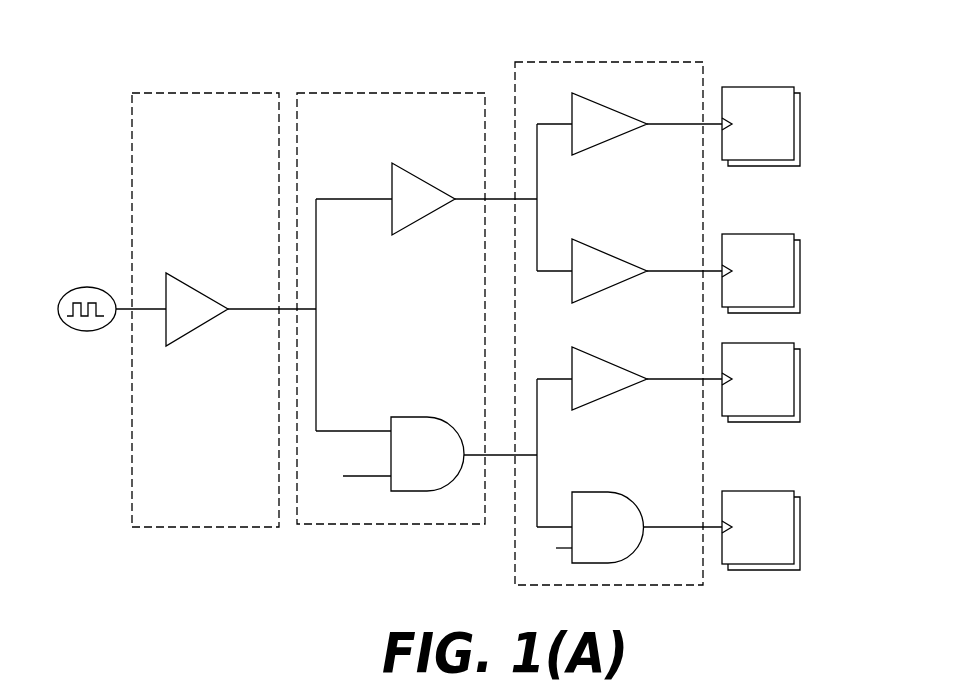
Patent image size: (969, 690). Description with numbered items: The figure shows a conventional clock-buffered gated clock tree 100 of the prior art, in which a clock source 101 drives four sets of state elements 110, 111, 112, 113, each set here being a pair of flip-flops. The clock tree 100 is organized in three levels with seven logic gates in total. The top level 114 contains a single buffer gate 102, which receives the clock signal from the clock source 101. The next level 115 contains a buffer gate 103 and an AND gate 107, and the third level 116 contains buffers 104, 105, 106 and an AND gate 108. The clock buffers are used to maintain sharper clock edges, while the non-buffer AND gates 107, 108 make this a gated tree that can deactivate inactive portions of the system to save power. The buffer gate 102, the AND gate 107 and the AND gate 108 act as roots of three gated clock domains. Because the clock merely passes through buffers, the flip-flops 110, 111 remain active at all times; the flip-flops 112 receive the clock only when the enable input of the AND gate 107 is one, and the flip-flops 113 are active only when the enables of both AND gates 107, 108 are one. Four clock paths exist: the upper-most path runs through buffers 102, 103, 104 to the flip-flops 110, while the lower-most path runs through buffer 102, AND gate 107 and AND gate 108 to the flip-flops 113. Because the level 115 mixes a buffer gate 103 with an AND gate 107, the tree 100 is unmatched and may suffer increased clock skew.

The conventional clock tree 100 is at (300, 77).
The clock source 101 is at (88, 287).
The buffer gate 102 is at (200, 293).
The buffer gate 103 is at (410, 173).
The buffer 104 is at (625, 134).
The buffer 105 is at (605, 253).
The buffer 106 is at (605, 361).
The AND gate 107 is at (410, 417).
The AND gate 108 is at (625, 496).
The flip-flops 110 is at (752, 87).
The flip-flops 111 is at (768, 234).
The flip-flops 112 is at (790, 343).
The flip-flops 113 is at (780, 491).
The top level 114 is at (185, 93).
The level 115 is at (383, 93).
The third level 116 is at (515, 68).